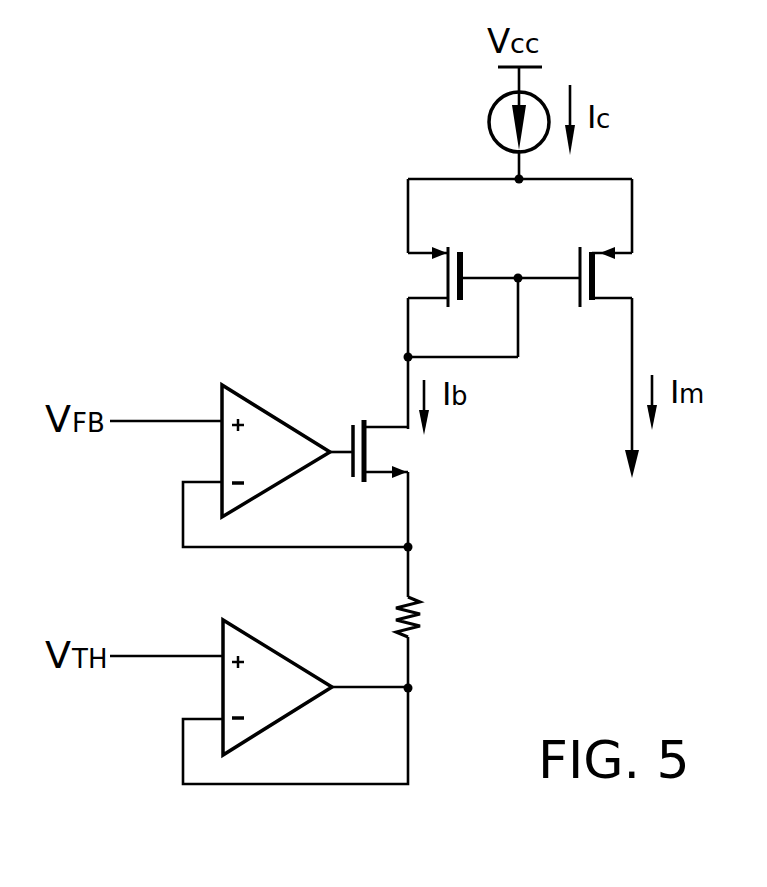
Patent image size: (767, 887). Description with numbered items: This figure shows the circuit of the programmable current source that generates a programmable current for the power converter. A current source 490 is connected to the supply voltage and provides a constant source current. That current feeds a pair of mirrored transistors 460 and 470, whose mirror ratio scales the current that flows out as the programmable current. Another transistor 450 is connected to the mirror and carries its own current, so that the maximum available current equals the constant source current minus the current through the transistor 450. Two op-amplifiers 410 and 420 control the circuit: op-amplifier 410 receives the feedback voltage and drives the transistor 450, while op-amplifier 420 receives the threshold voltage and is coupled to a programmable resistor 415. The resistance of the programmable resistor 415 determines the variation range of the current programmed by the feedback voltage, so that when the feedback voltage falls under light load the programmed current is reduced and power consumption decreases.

The current source 490 is at (483, 131).
The mirrored transistor 460 is at (405, 277).
The mirrored transistor 470 is at (640, 278).
The transistor 450 is at (420, 469).
The op-amplifier 410 is at (275, 400).
The op-amplifier 420 is at (293, 655).
The programmable resistor 415 is at (425, 622).